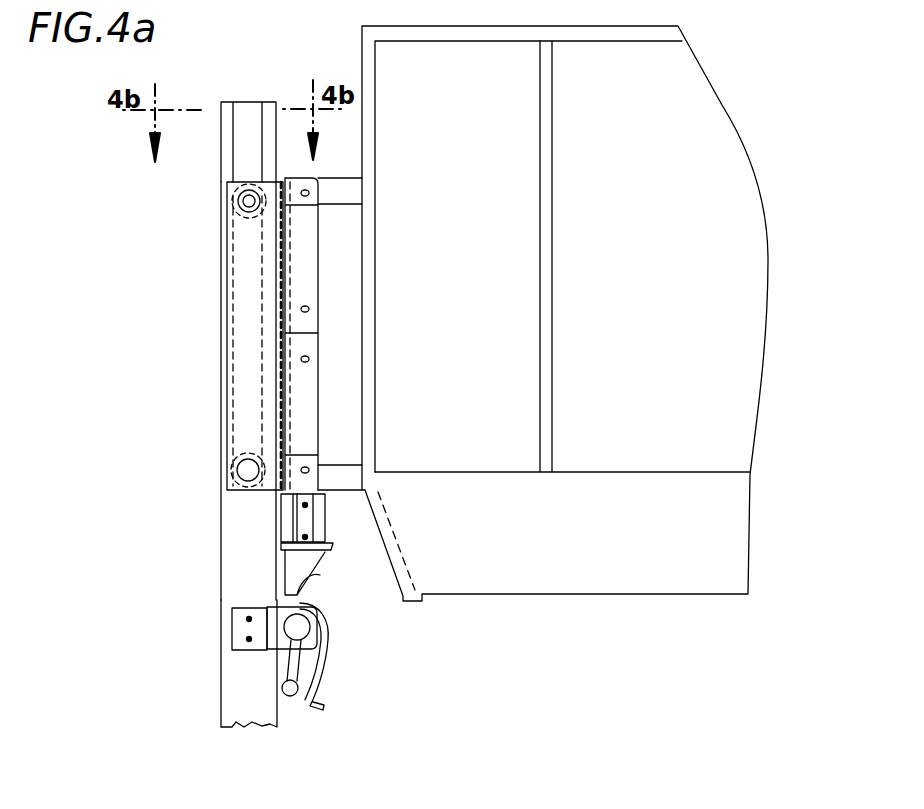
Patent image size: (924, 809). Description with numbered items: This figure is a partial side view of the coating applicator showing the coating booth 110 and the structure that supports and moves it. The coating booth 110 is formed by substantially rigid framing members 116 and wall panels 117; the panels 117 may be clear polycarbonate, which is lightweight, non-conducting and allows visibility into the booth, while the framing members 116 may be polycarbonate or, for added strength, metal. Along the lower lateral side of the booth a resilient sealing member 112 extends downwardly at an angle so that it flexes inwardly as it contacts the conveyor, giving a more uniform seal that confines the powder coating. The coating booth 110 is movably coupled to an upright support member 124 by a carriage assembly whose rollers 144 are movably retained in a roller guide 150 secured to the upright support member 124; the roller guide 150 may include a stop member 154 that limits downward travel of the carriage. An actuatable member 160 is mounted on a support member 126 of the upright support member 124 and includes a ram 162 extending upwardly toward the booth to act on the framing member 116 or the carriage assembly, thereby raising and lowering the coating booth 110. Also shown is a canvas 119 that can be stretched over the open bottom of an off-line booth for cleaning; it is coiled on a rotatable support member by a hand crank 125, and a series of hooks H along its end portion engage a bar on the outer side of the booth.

The coating booth 110 is at (748, 103).
The resilient sealing member 112 is at (423, 580).
The framing member 116 is at (555, 352).
The wall panel 117 is at (420, 68).
The canvas 119 is at (333, 658).
The upright support member 124 is at (220, 563).
The hand crank 125 is at (278, 712).
The support member 126 is at (280, 597).
The roller 144 is at (247, 218).
The roller guide 150 is at (243, 155).
The stop member 154 is at (245, 502).
The actuatable member 160 is at (327, 505).
The ram 162 is at (325, 493).
The hook H is at (317, 717).